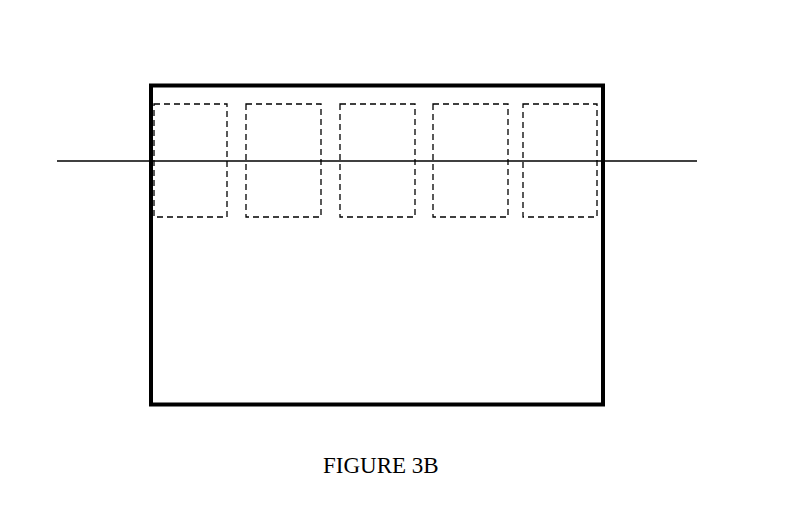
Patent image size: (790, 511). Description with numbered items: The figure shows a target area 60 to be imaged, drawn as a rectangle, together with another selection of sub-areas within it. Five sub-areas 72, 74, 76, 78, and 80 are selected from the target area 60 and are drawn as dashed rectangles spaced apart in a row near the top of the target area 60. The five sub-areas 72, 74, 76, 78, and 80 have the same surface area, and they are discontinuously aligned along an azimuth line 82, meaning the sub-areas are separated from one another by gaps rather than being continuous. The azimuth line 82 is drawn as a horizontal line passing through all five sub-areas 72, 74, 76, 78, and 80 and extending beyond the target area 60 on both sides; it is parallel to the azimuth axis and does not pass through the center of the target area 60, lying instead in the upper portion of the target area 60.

The target area 60 is at (151, 330).
The sub-area 72 is at (170, 123).
The sub-area 74 is at (263, 123).
The sub-area 76 is at (358, 123).
The sub-area 78 is at (452, 123).
The sub-area 80 is at (547, 123).
The azimuth line 82 is at (640, 161).